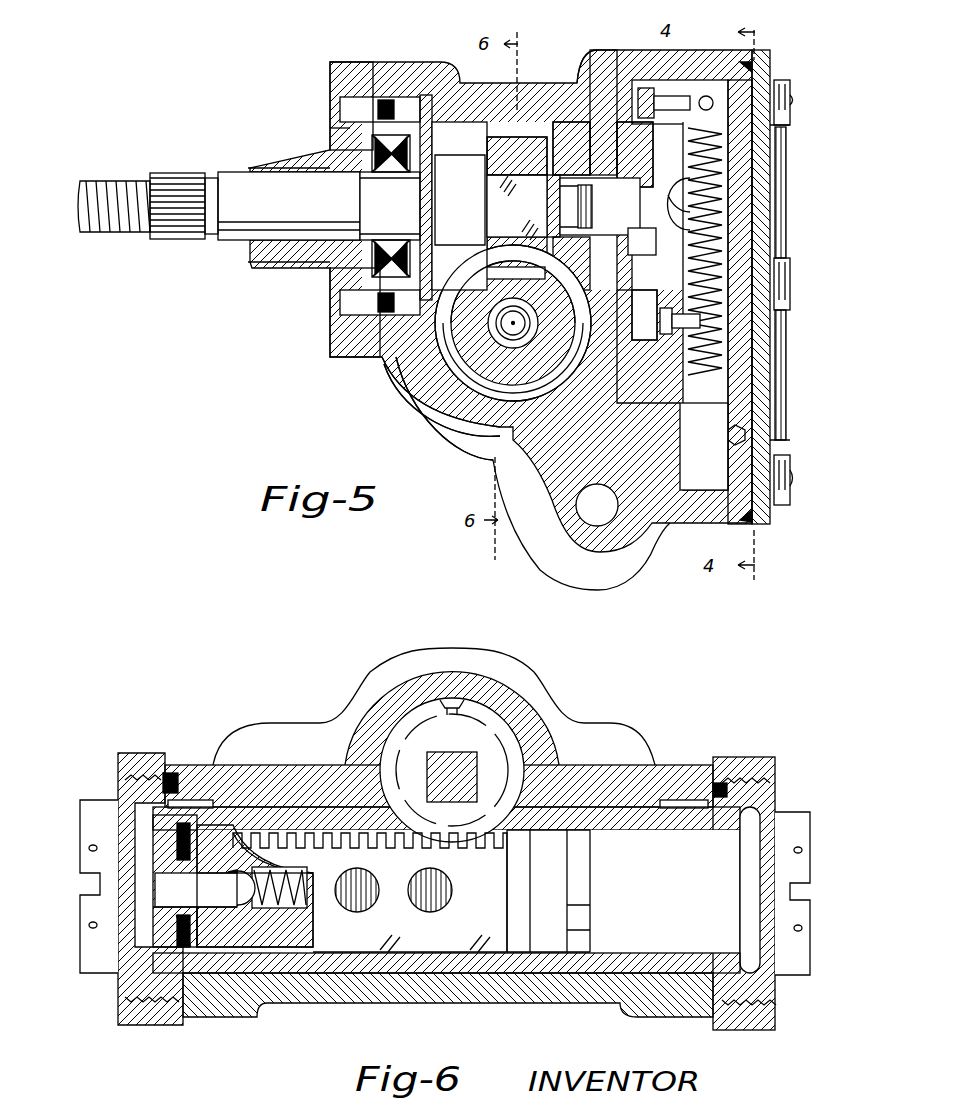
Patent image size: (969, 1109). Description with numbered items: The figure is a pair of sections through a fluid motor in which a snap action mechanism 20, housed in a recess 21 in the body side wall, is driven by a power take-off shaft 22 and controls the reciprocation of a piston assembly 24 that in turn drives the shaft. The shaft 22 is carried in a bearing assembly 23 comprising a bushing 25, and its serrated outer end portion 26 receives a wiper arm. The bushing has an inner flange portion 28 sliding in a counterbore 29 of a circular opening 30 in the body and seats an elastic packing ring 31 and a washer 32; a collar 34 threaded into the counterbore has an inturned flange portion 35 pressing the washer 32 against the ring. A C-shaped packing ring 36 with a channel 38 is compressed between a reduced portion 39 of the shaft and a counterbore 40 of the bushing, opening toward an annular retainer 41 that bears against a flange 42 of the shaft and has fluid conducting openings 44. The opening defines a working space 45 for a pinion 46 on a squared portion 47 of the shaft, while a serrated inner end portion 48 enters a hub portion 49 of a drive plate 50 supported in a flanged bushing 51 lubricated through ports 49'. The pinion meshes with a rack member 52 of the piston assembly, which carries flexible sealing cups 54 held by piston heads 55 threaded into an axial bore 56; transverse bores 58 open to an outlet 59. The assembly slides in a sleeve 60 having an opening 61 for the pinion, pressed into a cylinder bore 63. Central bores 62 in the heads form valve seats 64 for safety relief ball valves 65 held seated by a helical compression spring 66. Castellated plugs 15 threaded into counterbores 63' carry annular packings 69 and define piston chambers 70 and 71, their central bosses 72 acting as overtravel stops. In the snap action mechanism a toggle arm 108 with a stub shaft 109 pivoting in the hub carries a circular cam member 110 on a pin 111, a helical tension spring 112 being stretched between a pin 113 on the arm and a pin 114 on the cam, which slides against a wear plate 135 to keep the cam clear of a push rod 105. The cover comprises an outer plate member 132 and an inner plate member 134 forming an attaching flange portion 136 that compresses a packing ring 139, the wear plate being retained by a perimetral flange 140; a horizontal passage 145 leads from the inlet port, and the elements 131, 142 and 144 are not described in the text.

In FIG. 6, the castellated plug 15 is at (80, 825).
In FIG. 5, the snap action mechanism 20 is at (662, 96).
In FIG. 5, the recess 21 is at (713, 423).
In FIG. 5, the power take-off shaft 22 is at (303, 209).
In FIG. 5, the bearing assembly 23 is at (283, 279).
In FIG. 5, the piston assembly 24 is at (462, 372).
In FIG. 6, the piston assembly 24 is at (592, 857).
In FIG. 5, the bushing 25 is at (256, 168).
In FIG. 5, the longitudinally serrated outer end portion 26 is at (172, 172).
In FIG. 5, the inner flange portion 28 is at (414, 122).
In FIG. 5, the counterbore 29 is at (332, 112).
In FIG. 5, the circular opening 30 is at (335, 150).
In FIG. 5, the elastic packing ring 31 is at (400, 110).
In FIG. 5, the washer 32 is at (383, 100).
In FIG. 5, the collar 34 is at (330, 130).
In FIG. 5, the inturned flange portion 35 is at (348, 97).
In FIG. 5, the packing ring 36 is at (372, 262).
In FIG. 5, the channel 38 is at (360, 280).
In FIG. 5, the reduced portion 39 is at (397, 215).
In FIG. 5, the counterbore 40 is at (385, 292).
In FIG. 5, the annular retainer 41 is at (395, 332).
In FIG. 5, the flange 42 is at (432, 148).
In FIG. 5, the fluid conducting openings 44 is at (372, 318).
In FIG. 5, the working space 45 is at (443, 122).
In FIG. 5, the pinion 46 is at (510, 138).
In FIG. 5, the noncircular portion 47 is at (498, 209).
In FIG. 5, the longitudinally serrated inner end portion 48 is at (545, 215).
In FIG. 5, the hub portion 49 is at (562, 107).
In FIG. 5, the ports 49' is at (592, 71).
In FIG. 5, the drive plate 50 is at (628, 100).
In FIG. 5, the flanged bushing 51 is at (607, 150).
In FIG. 5, the rack member 52 is at (430, 408).
In FIG. 6, the rack member 52 is at (234, 947).
In FIG. 6, the flexible sealing cups 54 is at (150, 935).
In FIG. 6, the piston heads 55 is at (150, 912).
In FIG. 5, the axial bore 56 is at (505, 324).
In FIG. 6, the axial bore 56 is at (282, 908).
In FIG. 6, the transverse bores 58 is at (352, 912).
In FIG. 5, the outlet 59 is at (583, 338).
In FIG. 5, the sleeve 60 is at (445, 430).
In FIG. 6, the sleeve 60 is at (304, 960).
In FIG. 5, the opening 61 is at (445, 315).
In FIG. 6, the opening 61 is at (370, 778).
In FIG. 6, the central bores 62 is at (199, 894).
In FIG. 5, the cylinder bore 63 is at (444, 417).
In FIG. 6, the cylinder bore 63 is at (448, 1003).
In FIG. 6, the counterbores 63' is at (445, 753).
In FIG. 6, the valve seats 64 is at (175, 947).
In FIG. 6, the safety relief ball valves 65 is at (238, 888).
In FIG. 5, the helical compression spring 66 is at (530, 323).
In FIG. 6, the helical compression spring 66 is at (290, 885).
In FIG. 6, the annular packings 69 is at (172, 775).
In FIG. 6, the piston chamber 70 is at (170, 920).
In FIG. 6, the piston chamber 71 is at (703, 892).
In FIG. 6, the central bosses 72 is at (150, 870).
In FIG. 5, the push rod 105 is at (690, 212).
In FIG. 5, the toggle arm 108 is at (648, 345).
In FIG. 5, the stub shaft 109 is at (630, 215).
In FIG. 5, the cam member 110 is at (648, 349).
In FIG. 5, the pin 111 is at (646, 241).
In FIG. 5, the helical tension spring 112 is at (722, 158).
In FIG. 5, the pin 113 is at (730, 90).
In FIG. 5, the pin 114 is at (684, 330).
In FIG. 5, the rack bar 131 is at (797, 190).
In FIG. 5, the outer plate member 132 is at (770, 340).
In FIG. 5, the inner plate member 134 is at (770, 135).
In FIG. 5, the wear plate 135 is at (740, 372).
In FIG. 5, the attaching flange portion 136 is at (770, 62).
In FIG. 5, the packing ring 139 is at (760, 80).
In FIG. 5, the perimetral flange 140 is at (728, 432).
In FIG. 5, the cap screw 142 is at (790, 100).
In FIG. 5, the rack teeth 144 is at (786, 405).
In FIG. 5, the horizontal passage 145 is at (584, 513).